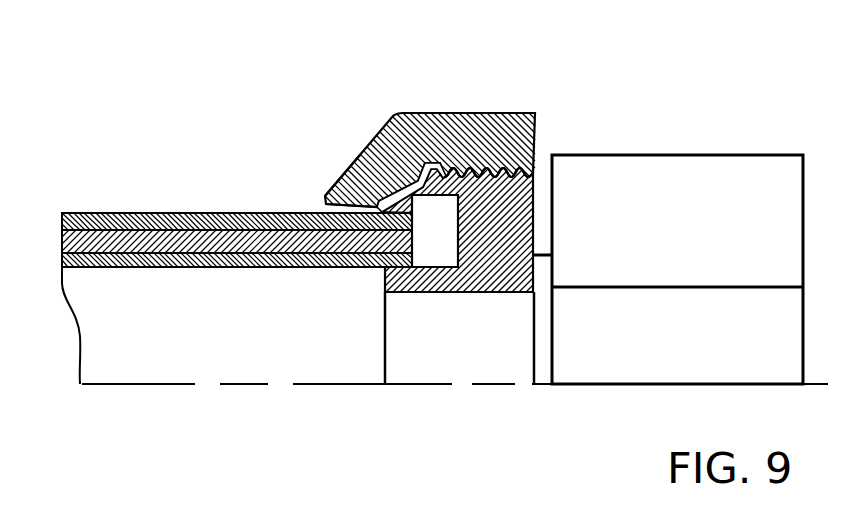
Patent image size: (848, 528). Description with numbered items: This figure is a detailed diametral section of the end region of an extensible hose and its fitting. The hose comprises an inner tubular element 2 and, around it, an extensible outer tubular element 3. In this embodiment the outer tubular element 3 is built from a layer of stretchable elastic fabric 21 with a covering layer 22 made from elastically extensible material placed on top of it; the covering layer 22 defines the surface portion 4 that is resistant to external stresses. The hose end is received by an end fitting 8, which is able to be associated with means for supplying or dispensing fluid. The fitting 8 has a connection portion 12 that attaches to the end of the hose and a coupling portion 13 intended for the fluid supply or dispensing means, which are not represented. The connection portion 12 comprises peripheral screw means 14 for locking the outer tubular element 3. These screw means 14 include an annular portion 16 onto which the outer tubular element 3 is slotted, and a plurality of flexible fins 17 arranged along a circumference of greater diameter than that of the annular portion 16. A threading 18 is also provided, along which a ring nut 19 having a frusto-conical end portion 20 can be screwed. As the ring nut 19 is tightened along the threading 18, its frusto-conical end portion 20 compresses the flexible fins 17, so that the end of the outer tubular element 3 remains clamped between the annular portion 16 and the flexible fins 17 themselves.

The inner tubular element 2 is at (178, 258).
The extensible outer tubular element 3 is at (62, 243).
The surface portion 4 is at (259, 213).
The end fitting 8 is at (662, 152).
The connection portion 12 is at (440, 115).
The coupling portion 13 is at (772, 184).
The peripheral screw means 14 is at (532, 163).
The annular portion 16 is at (427, 278).
The flexible fins 17 is at (395, 198).
The threading 18 is at (514, 160).
The ring nut 19 is at (481, 132).
The frusto-conical end portion 20 is at (362, 180).
The layer of stretchable elastic fabric 21 is at (219, 238).
The covering layer 22 is at (166, 224).